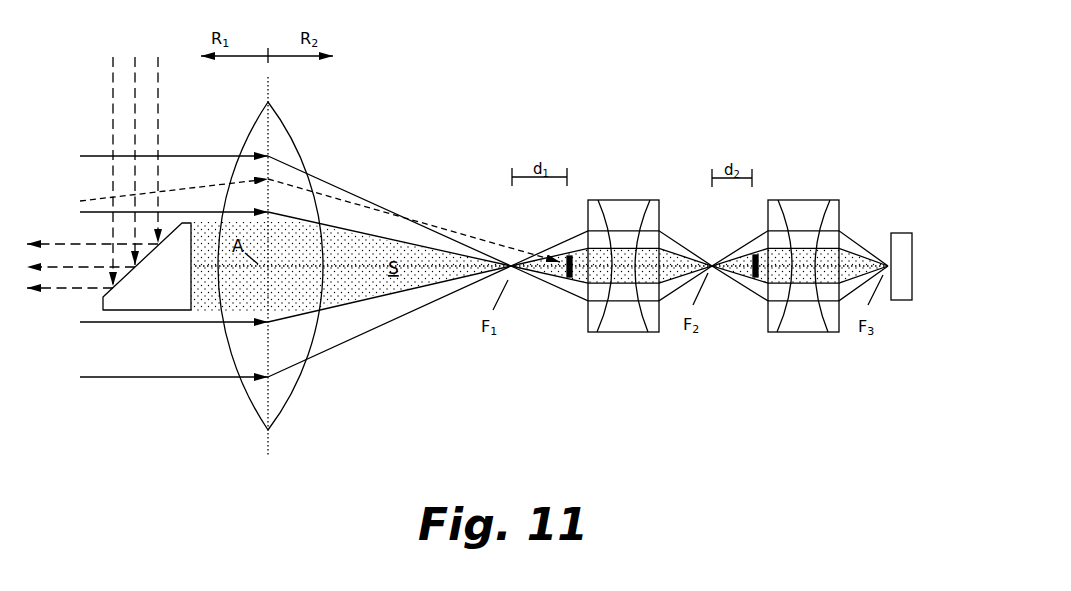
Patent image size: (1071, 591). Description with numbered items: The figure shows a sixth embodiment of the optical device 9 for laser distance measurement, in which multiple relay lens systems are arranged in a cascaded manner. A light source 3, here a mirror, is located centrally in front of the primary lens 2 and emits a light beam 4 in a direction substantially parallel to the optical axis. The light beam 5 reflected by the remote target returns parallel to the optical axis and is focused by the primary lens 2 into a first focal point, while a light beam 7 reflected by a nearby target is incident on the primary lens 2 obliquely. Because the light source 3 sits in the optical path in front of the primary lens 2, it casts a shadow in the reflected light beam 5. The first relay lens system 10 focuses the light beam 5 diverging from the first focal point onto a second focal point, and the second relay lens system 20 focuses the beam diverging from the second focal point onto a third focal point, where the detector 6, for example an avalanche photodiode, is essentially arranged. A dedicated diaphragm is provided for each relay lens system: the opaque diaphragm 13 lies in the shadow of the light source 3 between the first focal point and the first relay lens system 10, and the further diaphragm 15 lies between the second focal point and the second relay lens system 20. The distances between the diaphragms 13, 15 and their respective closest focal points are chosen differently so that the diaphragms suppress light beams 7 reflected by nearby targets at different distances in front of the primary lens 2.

The primary lens 2 is at (282, 140).
The light source 3 is at (147, 266).
The emitted light beam 4 is at (68, 243).
The light beam reflected by the remote target 5 is at (190, 378).
The detector 6 is at (902, 232).
The light beam reflected by the nearby target 7 is at (448, 228).
The optical device 9 is at (558, 55).
The first relay lens system 10 is at (625, 185).
The diaphragm 13 is at (567, 280).
The further diaphragm 15 is at (747, 280).
The second relay lens system 20 is at (801, 187).